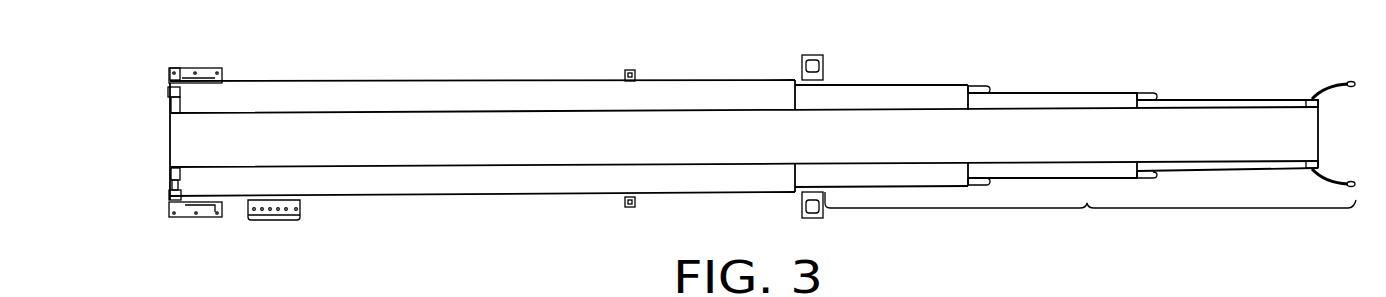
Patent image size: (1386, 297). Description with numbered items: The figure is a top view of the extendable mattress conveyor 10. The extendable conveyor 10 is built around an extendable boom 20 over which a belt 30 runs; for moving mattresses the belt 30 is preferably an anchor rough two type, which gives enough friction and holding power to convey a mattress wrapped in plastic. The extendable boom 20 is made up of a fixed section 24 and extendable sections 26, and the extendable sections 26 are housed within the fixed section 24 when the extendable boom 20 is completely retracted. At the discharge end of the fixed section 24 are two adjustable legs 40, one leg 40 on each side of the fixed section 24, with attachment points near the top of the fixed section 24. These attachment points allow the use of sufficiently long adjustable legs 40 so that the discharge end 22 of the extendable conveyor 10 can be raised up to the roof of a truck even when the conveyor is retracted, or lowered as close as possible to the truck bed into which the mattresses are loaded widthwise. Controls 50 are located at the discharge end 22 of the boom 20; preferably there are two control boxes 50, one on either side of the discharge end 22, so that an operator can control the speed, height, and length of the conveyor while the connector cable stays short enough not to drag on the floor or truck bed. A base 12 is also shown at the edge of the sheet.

The extendable mattress conveyor 10 is at (1057, 68).
The base 12 is at (186, 293).
The extendable boom 20 is at (903, 82).
The discharge end 22 is at (1333, 122).
The fixed section 24 is at (392, 96).
The extendable sections 26 is at (1087, 211).
The belt 30 is at (745, 149).
The adjustable legs 40 is at (812, 71).
The control boxes 50 is at (1346, 79).